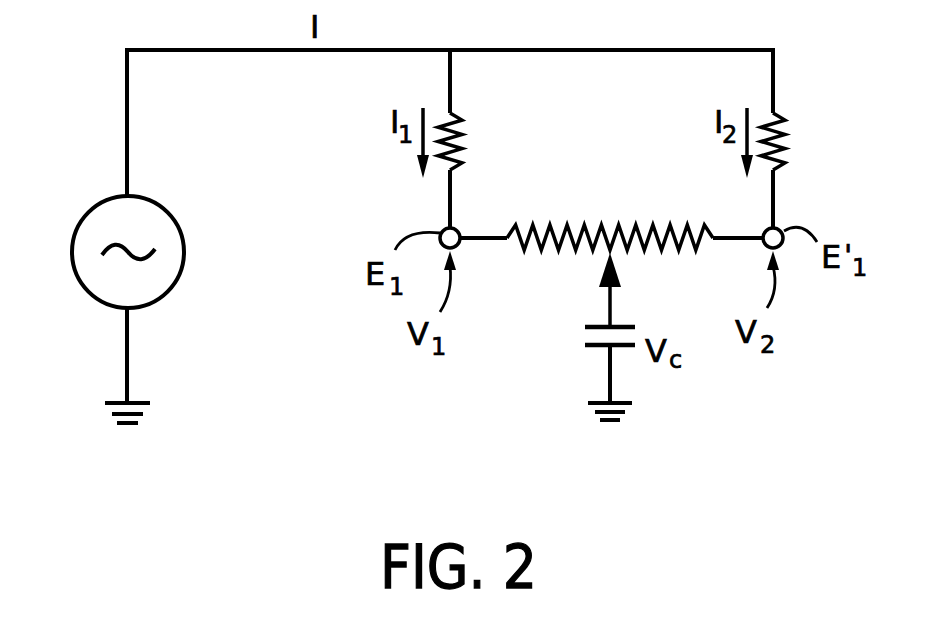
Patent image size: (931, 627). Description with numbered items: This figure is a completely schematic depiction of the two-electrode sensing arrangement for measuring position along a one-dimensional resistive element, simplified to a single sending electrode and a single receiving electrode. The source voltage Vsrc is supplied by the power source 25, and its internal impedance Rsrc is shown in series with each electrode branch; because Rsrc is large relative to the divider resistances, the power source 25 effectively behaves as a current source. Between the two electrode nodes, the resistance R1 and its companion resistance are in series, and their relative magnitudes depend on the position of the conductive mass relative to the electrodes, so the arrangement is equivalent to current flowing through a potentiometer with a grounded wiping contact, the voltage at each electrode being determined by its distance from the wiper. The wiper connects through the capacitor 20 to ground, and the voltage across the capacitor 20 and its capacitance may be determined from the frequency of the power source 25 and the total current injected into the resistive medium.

The capacitor 20 is at (572, 336).
The power source 25 is at (122, 281).
The internal impedance of the power source Rsrc is at (649, 138).
The resistance R_1 R1 is at (610, 265).
The source voltage Vsrc is at (197, 322).